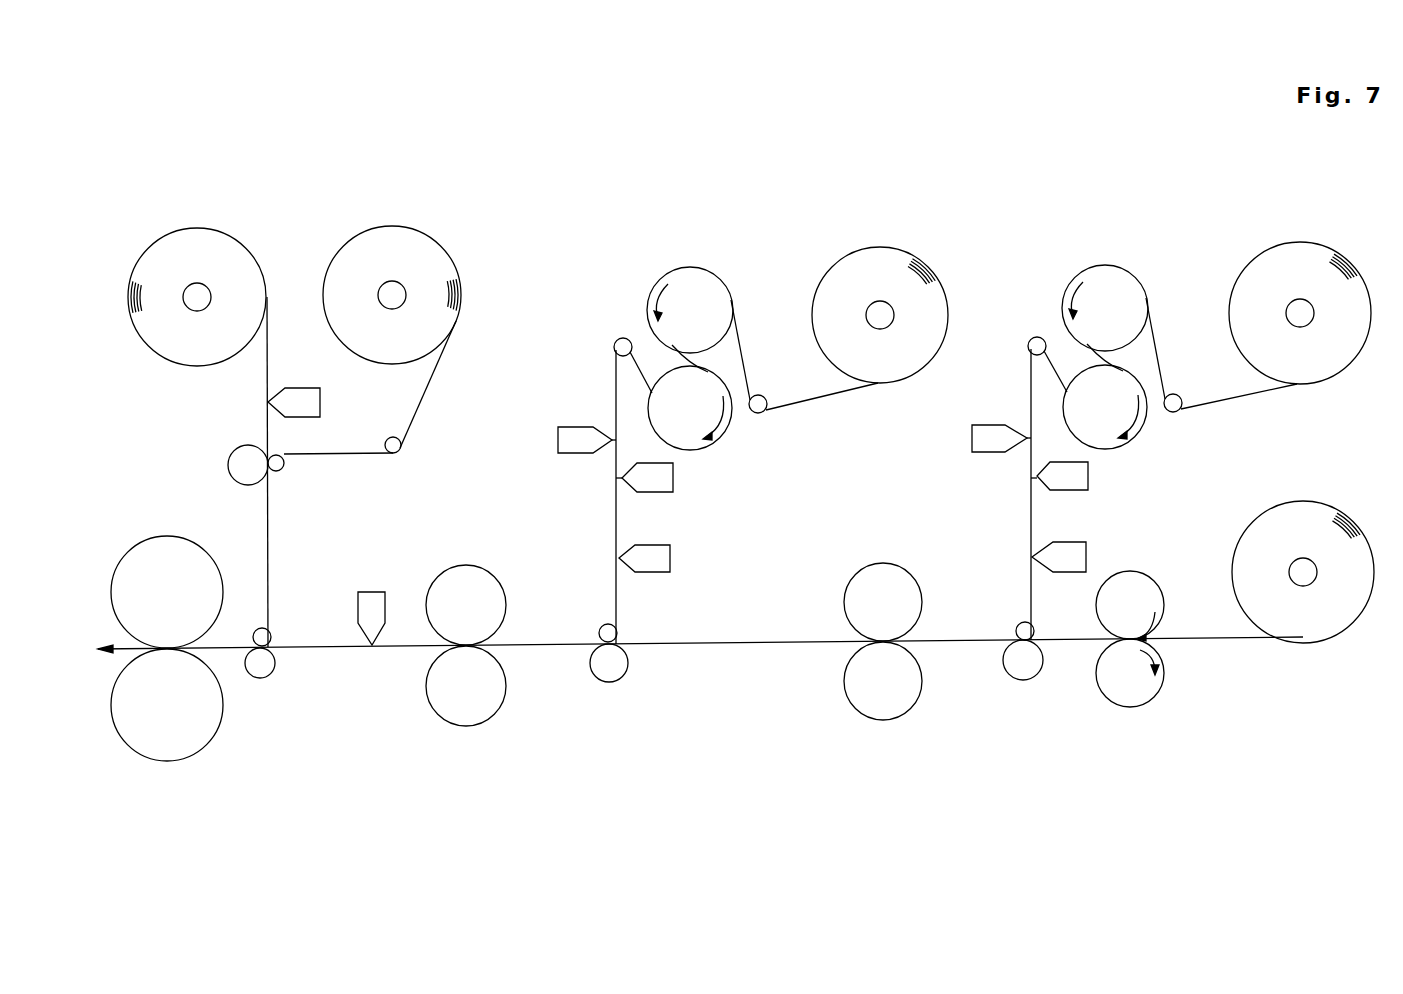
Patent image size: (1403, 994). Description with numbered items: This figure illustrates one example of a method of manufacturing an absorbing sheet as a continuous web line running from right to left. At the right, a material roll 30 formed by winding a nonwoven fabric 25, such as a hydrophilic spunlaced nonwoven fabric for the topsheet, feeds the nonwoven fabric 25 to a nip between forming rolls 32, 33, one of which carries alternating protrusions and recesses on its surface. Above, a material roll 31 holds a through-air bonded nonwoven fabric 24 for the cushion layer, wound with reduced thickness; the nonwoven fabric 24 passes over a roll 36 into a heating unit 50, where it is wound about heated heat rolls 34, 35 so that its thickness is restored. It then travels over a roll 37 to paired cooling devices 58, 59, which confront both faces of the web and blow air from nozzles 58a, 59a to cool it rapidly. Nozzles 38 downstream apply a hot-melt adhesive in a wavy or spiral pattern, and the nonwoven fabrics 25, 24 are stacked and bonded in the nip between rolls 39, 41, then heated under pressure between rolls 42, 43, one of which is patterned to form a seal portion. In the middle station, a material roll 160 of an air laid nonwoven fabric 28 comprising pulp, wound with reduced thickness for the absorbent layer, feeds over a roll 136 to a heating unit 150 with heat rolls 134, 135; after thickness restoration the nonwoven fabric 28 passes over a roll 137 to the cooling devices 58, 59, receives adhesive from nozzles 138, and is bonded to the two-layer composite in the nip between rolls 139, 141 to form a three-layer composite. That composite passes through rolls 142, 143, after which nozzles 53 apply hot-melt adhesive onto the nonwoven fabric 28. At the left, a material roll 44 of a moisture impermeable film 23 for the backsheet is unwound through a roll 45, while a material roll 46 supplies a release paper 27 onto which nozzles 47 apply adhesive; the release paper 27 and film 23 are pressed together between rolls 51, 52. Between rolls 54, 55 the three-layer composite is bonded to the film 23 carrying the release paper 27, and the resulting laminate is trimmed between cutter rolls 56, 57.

The material roll 46 is at (229, 230).
The material roll 44 is at (415, 224).
The release paper 27 is at (270, 351).
The nozzles 47 is at (310, 400).
The moisture impermeable film 23 is at (432, 385).
The roll 45 is at (393, 453).
The roll 51 is at (284, 468).
The roll 52 is at (236, 468).
The cutter roll 56 is at (163, 545).
The cutter roll 57 is at (207, 725).
The roll 54 is at (258, 628).
The roll 55 is at (270, 663).
The nozzles 53 is at (368, 595).
The roll 142 is at (470, 575).
The roll 143 is at (490, 712).
The roll 137 is at (623, 337).
The heat roll 134 is at (690, 272).
The heat roll 135 is at (688, 438).
The heating unit 150 is at (728, 280).
The roll 136 is at (760, 396).
The material roll 160 is at (940, 268).
The nonwoven fabric 28 is at (840, 398).
The cooling device 58 is at (570, 450).
The nozzle 58a is at (608, 445).
The cooling device 59 is at (645, 470).
The nozzle 59a is at (622, 480).
The nozzles 138 is at (650, 565).
The roll 139 is at (607, 625).
The roll 141 is at (608, 675).
The roll 42 is at (884, 575).
The roll 43 is at (903, 705).
The roll 37 is at (1037, 337).
The heat roll 34 is at (1106, 272).
The heat roll 35 is at (1103, 438).
The heating unit 50 is at (1143, 275).
The roll 36 is at (1175, 396).
The material roll 31 is at (1365, 268).
The nonwoven fabric 24 is at (1260, 398).
The material roll 30 is at (1350, 497).
The nonwoven fabric 25 is at (1278, 645).
The nozzles 38 is at (1064, 567).
The roll 39 is at (1023, 625).
The roll 41 is at (1022, 675).
The forming roll 32 is at (1133, 577).
The forming roll 33 is at (1137, 700).